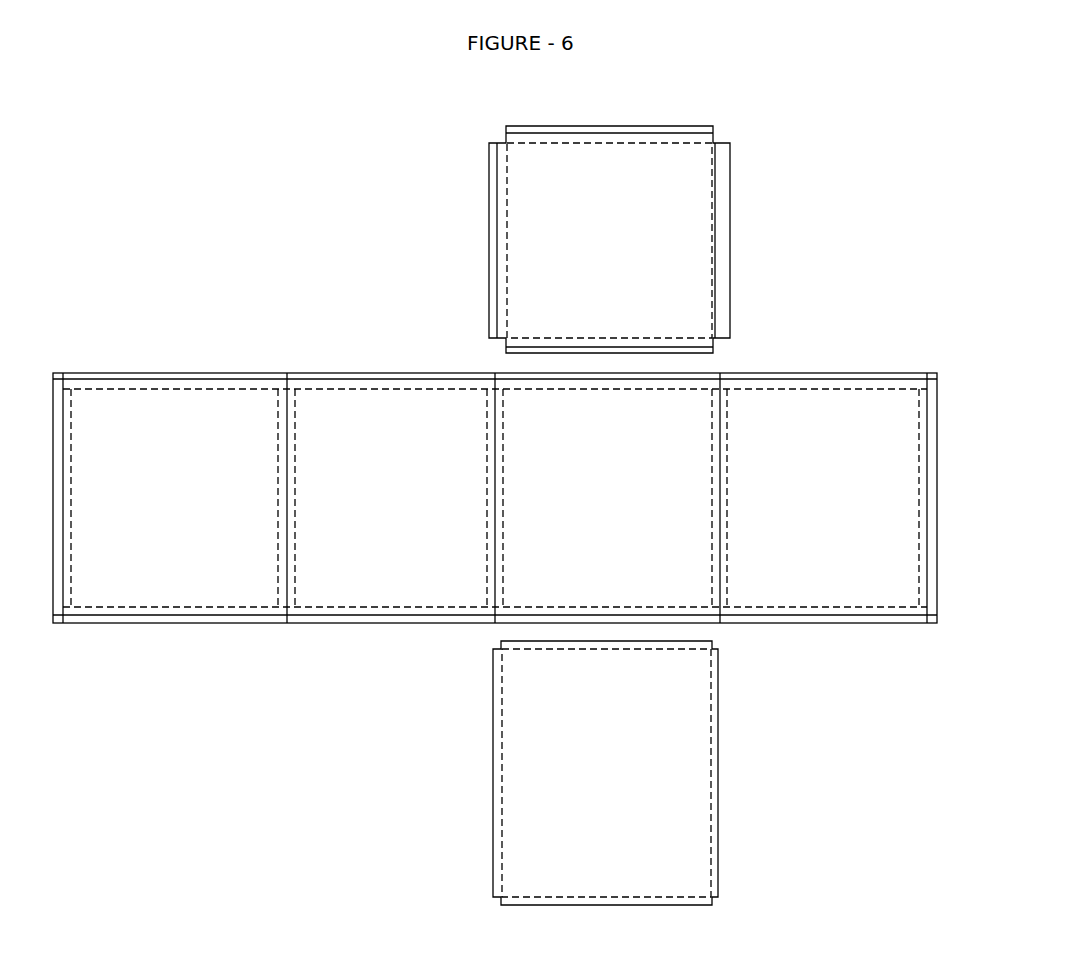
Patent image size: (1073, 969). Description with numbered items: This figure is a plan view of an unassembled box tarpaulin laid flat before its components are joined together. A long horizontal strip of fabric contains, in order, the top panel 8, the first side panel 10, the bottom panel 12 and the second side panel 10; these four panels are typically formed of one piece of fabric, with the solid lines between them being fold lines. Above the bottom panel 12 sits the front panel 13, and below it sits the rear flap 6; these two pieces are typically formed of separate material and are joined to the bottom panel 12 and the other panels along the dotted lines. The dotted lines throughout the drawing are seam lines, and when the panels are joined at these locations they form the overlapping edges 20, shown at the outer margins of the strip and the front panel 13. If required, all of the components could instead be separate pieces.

The rear flap 6 is at (683, 780).
The top panel 8 is at (199, 410).
The side panel 10 is at (338, 410).
The bottom panel 12 is at (608, 497).
The front panel 13 is at (538, 205).
The overlapping edge 20 is at (492, 268).